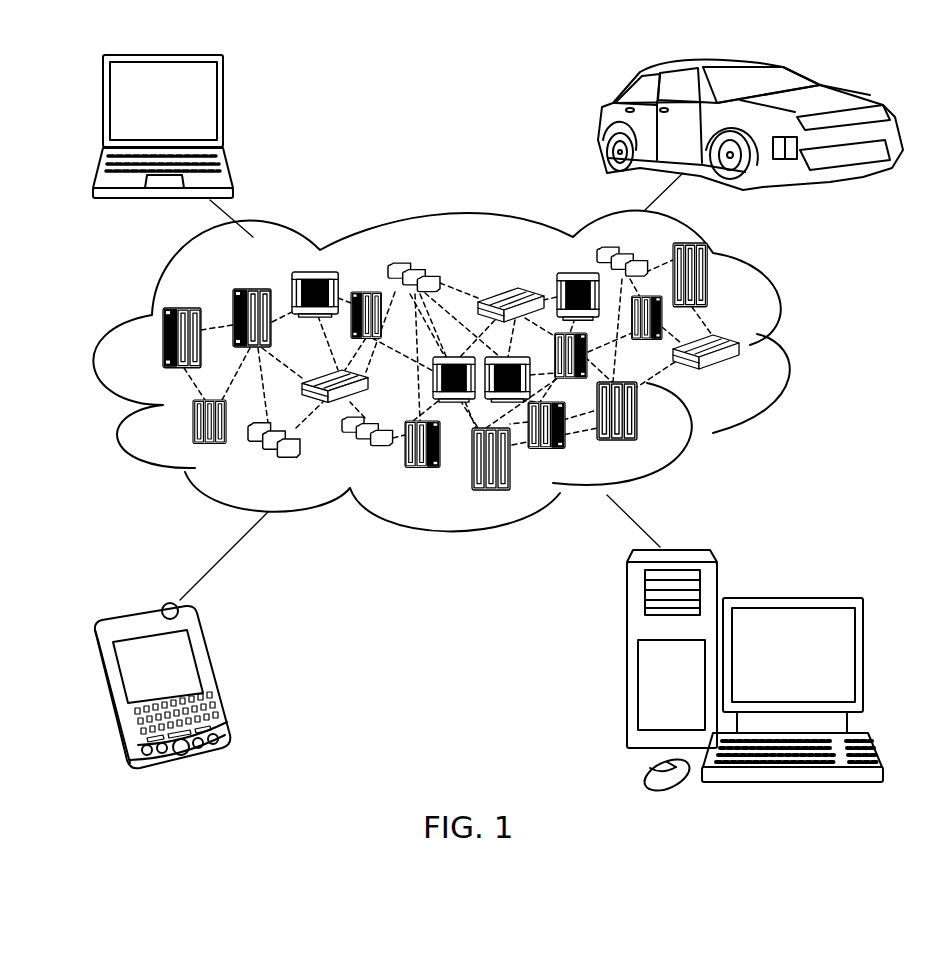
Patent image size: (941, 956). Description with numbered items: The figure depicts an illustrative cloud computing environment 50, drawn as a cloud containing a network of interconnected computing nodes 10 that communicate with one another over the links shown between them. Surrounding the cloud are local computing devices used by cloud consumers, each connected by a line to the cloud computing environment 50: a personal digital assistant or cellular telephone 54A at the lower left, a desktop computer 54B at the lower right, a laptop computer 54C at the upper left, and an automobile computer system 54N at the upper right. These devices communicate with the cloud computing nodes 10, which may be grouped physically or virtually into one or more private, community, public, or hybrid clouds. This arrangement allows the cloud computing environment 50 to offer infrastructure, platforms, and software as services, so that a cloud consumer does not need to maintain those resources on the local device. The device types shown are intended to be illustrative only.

The cloud computing nodes 10 is at (749, 380).
The cloud computing environment 50 is at (792, 353).
The personal digital assistant (PDA) or cellular telephone 54A is at (213, 677).
The desktop computer 54B is at (790, 598).
The laptop computer 54C is at (225, 108).
The automobile computer system 54N is at (603, 126).